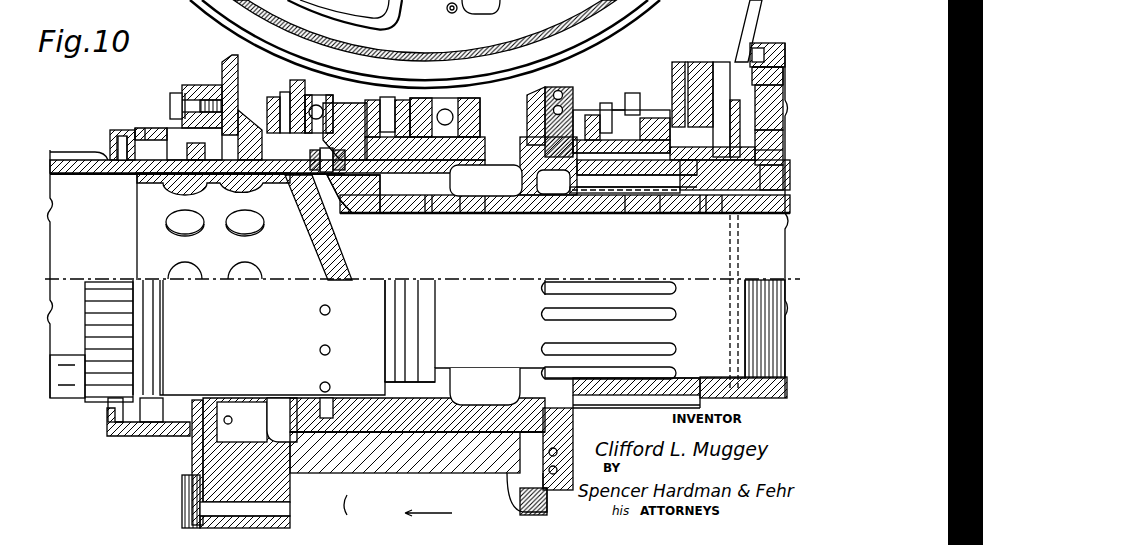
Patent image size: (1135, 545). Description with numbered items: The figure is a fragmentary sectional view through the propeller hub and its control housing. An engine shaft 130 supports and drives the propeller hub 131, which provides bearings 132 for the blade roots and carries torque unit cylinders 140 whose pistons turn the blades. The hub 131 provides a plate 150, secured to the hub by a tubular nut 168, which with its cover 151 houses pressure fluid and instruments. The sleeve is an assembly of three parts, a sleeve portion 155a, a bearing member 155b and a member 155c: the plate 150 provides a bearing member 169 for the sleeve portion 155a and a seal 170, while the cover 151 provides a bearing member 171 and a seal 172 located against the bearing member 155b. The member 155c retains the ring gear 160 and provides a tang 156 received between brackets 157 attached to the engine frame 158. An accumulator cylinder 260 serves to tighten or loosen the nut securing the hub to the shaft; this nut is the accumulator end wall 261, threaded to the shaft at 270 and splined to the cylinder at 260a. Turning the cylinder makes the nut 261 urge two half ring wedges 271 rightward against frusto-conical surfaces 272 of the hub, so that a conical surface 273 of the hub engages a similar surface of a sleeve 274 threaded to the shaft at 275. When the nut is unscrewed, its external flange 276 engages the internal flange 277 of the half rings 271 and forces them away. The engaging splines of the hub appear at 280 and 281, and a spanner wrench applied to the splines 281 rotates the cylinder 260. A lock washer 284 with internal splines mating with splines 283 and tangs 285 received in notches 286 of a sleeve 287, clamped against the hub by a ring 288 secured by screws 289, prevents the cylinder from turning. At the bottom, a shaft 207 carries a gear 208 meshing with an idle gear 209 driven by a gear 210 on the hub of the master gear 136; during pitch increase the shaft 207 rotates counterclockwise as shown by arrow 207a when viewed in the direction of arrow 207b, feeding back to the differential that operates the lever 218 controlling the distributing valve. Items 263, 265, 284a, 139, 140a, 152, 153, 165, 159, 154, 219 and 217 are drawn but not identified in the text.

The accumulator cylinder 260 is at (78, 157).
The scalloped flange 263 is at (137, 182).
The master gear 136 is at (241, 180).
The end wall 261 is at (316, 236).
The splined connection 260a is at (365, 215).
The threaded connection 270 is at (398, 280).
The half ring wedges 271 is at (440, 213).
The external flange 276 is at (462, 213).
The internal flange 277 is at (425, 213).
The engine shaft 130 is at (492, 214).
The propeller hub 131 is at (222, 70).
The splines of the hub 280 is at (562, 215).
The splines 281 is at (548, 290).
The frusto-conical surfaces 272 is at (486, 180).
The block 265 is at (460, 430).
The splines 283 is at (112, 138).
The lock washer 284 is at (120, 136).
The bracket part 284a is at (127, 136).
The tangs 285 is at (135, 130).
The notches 286 is at (145, 128).
The sleeve 287 is at (182, 106).
The ring 288 is at (177, 93).
The screws 289 is at (186, 93).
The bearing support 139 is at (268, 98).
The torque unit cylinder 140 is at (295, 95).
The bearing race 140a is at (310, 95).
The bearings 132 is at (310, 155).
The plate 150 is at (563, 112).
The assembly 152 is at (665, 125).
The seal 170 is at (604, 103).
The bearing member 169 is at (618, 110).
The member 153 is at (640, 100).
The bracket 165 is at (678, 62).
The cover 151 is at (700, 62).
The bearing member 171 is at (686, 62).
The seal 172 is at (750, 30).
The brackets 157 is at (785, 53).
The tang 156 is at (783, 77).
The ring gear 160 is at (783, 101).
The engine frame 158 is at (783, 131).
The ring 159 is at (775, 147).
The sleeve member 155c is at (783, 170).
The sleeve portion 155a is at (613, 214).
The member 154 is at (627, 214).
The tubular nut 168 is at (661, 214).
The bearing member 155b is at (700, 214).
The conical surface 273 is at (706, 214).
The sleeve 274 is at (722, 214).
The threaded connection 275 is at (770, 214).
The gear 210 is at (190, 412).
The idle gear 209 is at (183, 481).
The gear 208 is at (183, 512).
The shaft 207 is at (296, 510).
The arrow 207a is at (363, 505).
The arrow 207b is at (428, 520).
The housing 219 is at (420, 0).
The lever 218 is at (447, 12).
The link 217 is at (482, 14).